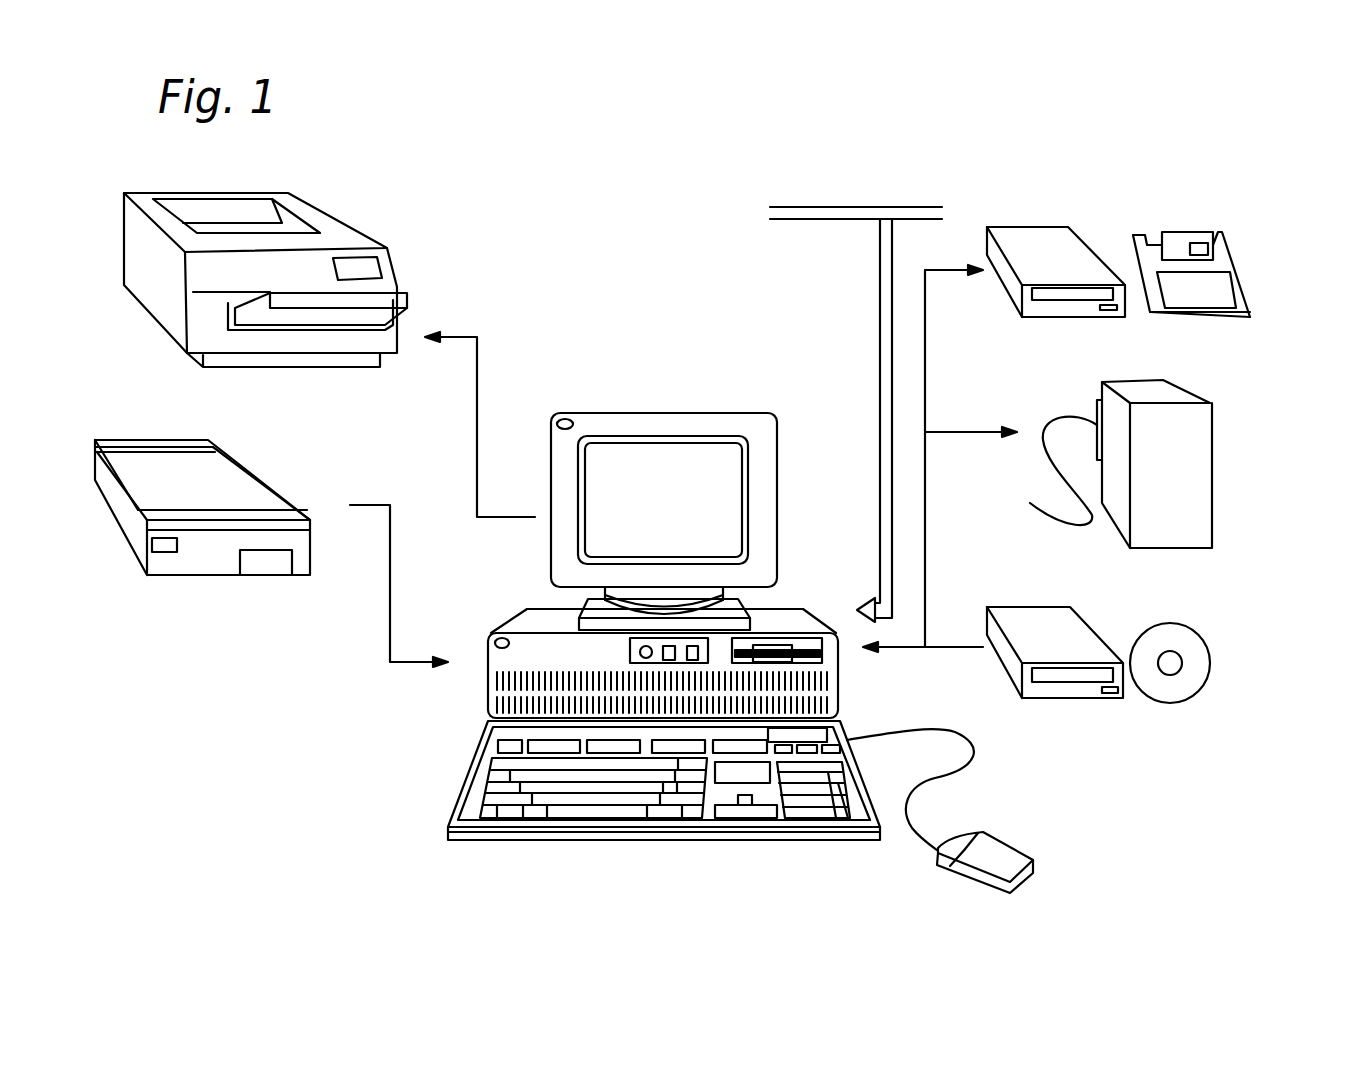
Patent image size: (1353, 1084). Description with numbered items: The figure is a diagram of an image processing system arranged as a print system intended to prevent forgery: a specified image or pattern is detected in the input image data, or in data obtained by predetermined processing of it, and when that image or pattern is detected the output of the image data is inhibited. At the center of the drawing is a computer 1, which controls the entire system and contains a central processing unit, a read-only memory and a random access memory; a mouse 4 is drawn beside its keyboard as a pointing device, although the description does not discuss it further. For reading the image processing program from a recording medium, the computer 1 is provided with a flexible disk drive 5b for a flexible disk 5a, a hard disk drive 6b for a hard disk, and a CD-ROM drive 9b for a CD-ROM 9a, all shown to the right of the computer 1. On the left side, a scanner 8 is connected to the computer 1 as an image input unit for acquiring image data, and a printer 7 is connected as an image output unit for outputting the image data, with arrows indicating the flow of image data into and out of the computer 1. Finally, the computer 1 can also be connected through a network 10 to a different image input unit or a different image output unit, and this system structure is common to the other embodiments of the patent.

The computer 1 is at (486, 660).
The mouse 4 is at (977, 863).
The flexible disk 5a is at (1220, 288).
The flexible disk drive 5b is at (1040, 243).
The hard disk drive 6b is at (1168, 390).
The printer 7 is at (348, 242).
The scanner 8 is at (238, 488).
The CD-ROM 9a is at (1192, 640).
The CD-ROM drive 9b is at (1040, 623).
The network 10 is at (813, 221).